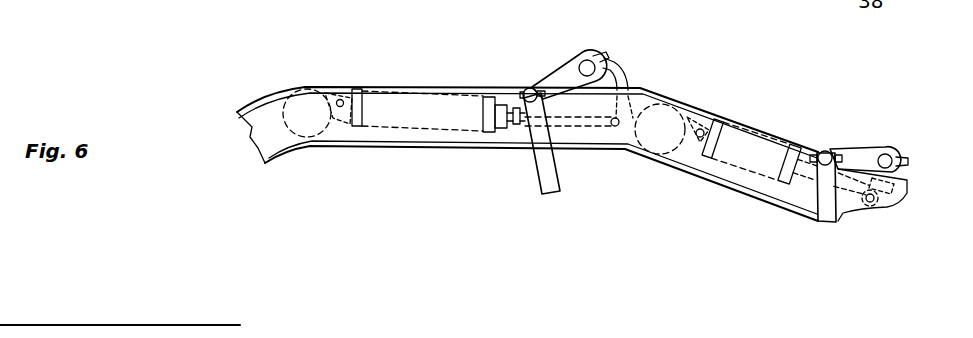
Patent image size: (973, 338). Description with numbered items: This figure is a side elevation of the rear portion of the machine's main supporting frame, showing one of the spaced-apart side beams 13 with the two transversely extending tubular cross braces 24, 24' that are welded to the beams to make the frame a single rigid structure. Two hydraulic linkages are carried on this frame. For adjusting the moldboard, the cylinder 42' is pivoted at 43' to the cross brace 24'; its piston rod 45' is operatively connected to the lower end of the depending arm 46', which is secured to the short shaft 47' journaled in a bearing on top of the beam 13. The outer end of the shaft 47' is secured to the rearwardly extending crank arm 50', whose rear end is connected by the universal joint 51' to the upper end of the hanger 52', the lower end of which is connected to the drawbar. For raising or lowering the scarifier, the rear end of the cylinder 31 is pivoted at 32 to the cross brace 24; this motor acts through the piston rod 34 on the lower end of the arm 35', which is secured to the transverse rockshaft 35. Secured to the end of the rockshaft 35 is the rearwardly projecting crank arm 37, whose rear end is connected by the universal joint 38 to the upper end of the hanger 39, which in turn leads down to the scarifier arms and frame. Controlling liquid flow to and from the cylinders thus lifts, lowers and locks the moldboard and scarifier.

The side beam 13 is at (474, 87).
The cross brace 24' is at (284, 102).
The pivot 43' is at (341, 82).
The cylinder 42' is at (438, 81).
The piston rod 45' is at (573, 153).
The universal joint 51' is at (527, 55).
The hanger 52' is at (525, 144).
The crank arm 50' is at (570, 56).
The short shaft 47' is at (599, 42).
The depending arm 46' is at (638, 73).
The cross brace 24 is at (666, 153).
The pivot 32 is at (702, 128).
The cylinder 31 is at (738, 166).
The hanger 39 is at (816, 198).
The universal joint 38 is at (825, 151).
The crank arm 37 is at (857, 148).
The piston rod 34 is at (857, 176).
The rockshaft 35 is at (905, 138).
The arm 35' is at (914, 203).